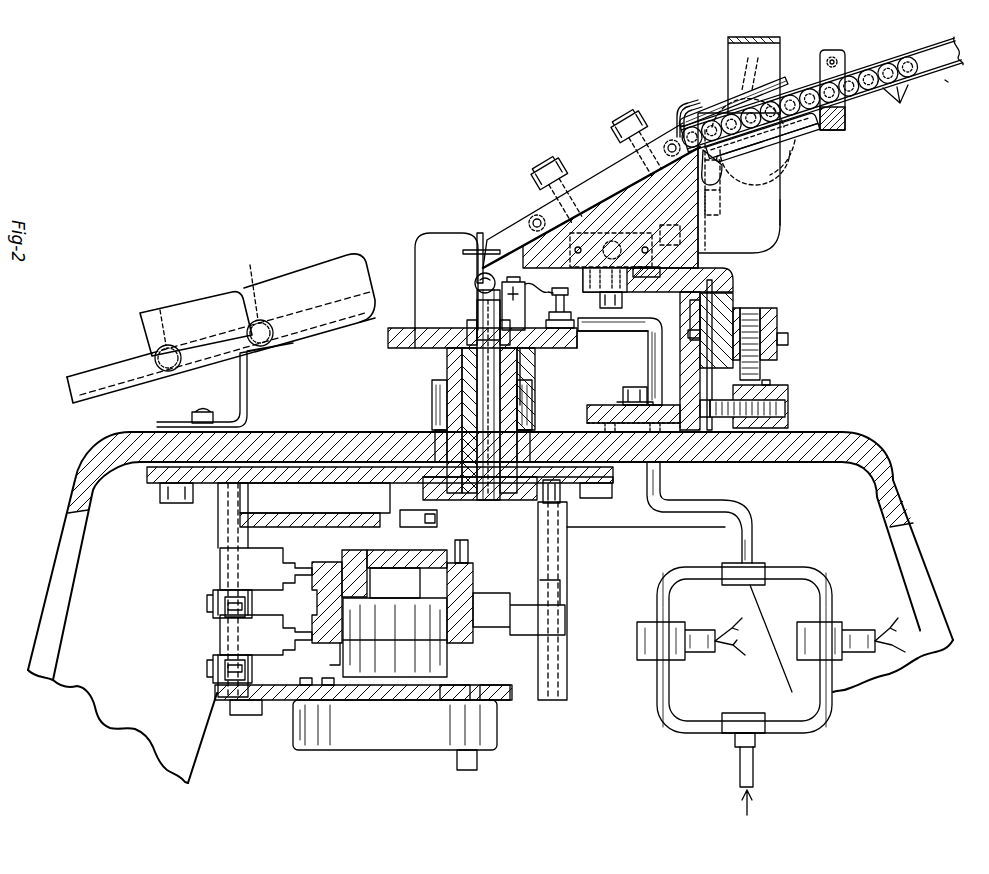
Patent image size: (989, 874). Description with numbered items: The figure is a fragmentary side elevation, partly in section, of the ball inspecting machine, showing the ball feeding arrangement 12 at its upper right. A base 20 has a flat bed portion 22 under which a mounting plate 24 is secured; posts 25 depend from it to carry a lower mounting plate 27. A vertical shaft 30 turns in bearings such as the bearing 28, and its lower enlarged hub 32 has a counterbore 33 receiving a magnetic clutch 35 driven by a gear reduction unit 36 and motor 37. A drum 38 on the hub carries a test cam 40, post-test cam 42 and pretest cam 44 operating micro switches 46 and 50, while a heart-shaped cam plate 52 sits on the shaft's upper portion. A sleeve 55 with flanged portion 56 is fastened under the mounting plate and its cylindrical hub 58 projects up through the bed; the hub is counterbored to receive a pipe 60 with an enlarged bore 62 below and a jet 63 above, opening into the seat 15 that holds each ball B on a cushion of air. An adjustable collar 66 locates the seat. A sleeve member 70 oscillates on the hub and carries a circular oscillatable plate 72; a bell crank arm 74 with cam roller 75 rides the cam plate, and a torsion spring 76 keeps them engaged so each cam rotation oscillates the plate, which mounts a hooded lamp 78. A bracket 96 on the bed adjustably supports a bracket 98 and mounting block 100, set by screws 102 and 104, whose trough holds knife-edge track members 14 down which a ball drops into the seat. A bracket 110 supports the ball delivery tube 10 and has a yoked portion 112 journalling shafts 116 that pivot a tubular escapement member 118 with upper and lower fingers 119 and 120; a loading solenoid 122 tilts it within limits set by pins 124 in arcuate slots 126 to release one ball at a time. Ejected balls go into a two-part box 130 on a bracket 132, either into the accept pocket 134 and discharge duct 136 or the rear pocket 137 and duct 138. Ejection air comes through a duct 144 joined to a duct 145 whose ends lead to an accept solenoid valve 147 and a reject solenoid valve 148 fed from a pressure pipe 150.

The ball delivery tube 10 is at (943, 73).
The article feeding chute 12 is at (694, 100).
The knife-edge track members 14 is at (600, 178).
The seat 15 is at (490, 285).
The base 20 is at (912, 512).
The bed portion 22 is at (842, 432).
The mounting plate 24 is at (150, 483).
The posts 25 is at (220, 538).
The lower mounting plate 27 is at (262, 700).
The bearing 28 is at (345, 483).
The vertical shaft 30 is at (395, 495).
The enlarged hub 32 is at (342, 560).
The counterbore 33 is at (380, 562).
The clutch 35 is at (459, 542).
The gear reduction unit 36 is at (395, 622).
The motor 37 is at (401, 727).
The drum 38 is at (462, 635).
The test cam 40 is at (473, 600).
The post-test cam 42 is at (318, 598).
The pretest cam 44 is at (330, 640).
The micro switch 46 is at (259, 583).
The micro switch 50 is at (259, 649).
The heart-shaped rotating cam plate 52 is at (240, 520).
The sleeve 55 is at (500, 372).
The flanged portion 56 is at (562, 497).
The cylindrical hub 58 is at (500, 392).
The pipe 60 is at (477, 365).
The enlarged bore 62 is at (480, 375).
The jet 63 is at (478, 298).
The adjustable collar 66 is at (468, 325).
The sleeve member 70 is at (432, 392).
The oscillatable plate 72 is at (388, 338).
The bell crank arm 74 is at (460, 490).
The cam roller 75 is at (437, 518).
The torsion spring 76 is at (435, 410).
The lamp 78 is at (527, 303).
The bracket 96 is at (712, 310).
The bracket 98 is at (733, 278).
The mounting block 100 is at (765, 245).
The screw 102 is at (789, 405).
The screw 104 is at (778, 318).
The bracket 110 is at (770, 210).
The yoked portion 112 is at (848, 129).
The shafts 116 is at (815, 140).
The tubular escapement member 118 is at (815, 150).
The upper escapement finger 119 is at (678, 122).
The lower escapement finger 120 is at (724, 183).
The loading solenoid 122 is at (705, 95).
The pins 124 is at (866, 178).
The arcuate slots 126 is at (800, 80).
The two-part box 130 is at (140, 338).
The bracket 132 is at (238, 390).
The pocket 134 is at (310, 258).
The discharge duct 136 is at (257, 290).
The rear pocket 137 is at (187, 305).
The duct 138 is at (158, 330).
The air pressure duct 144 is at (600, 333).
The duct 145 is at (705, 567).
The accept solenoid valve 147 is at (640, 660).
The reject solenoid valve 148 is at (838, 622).
The air pressure feed pipe 150 is at (755, 770).
The ball B is at (475, 280).